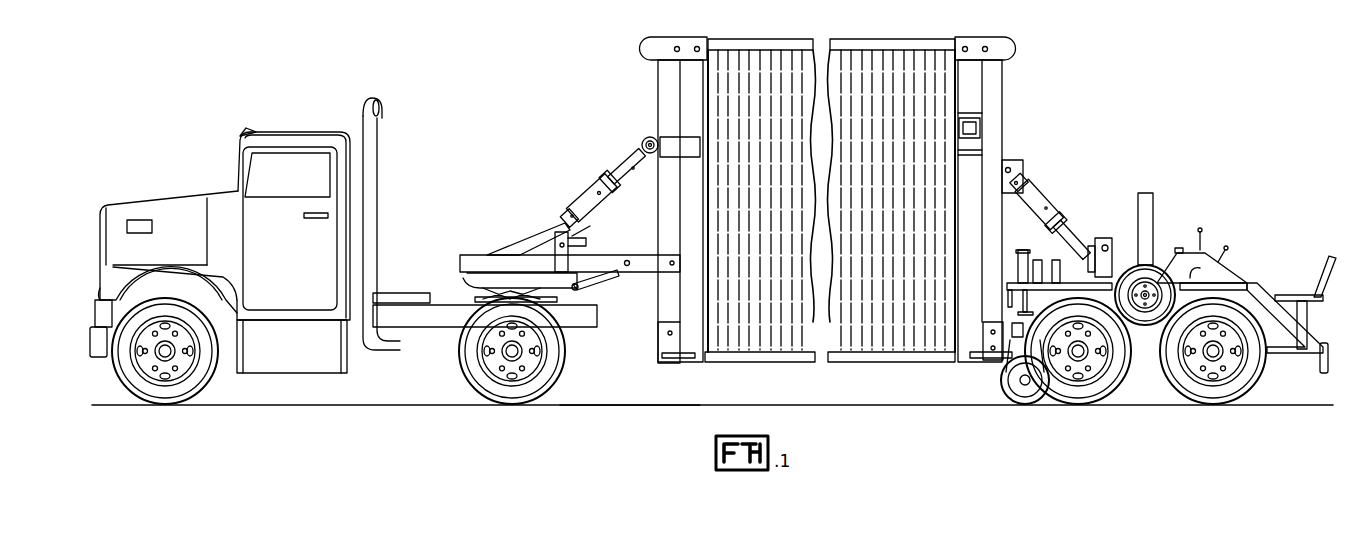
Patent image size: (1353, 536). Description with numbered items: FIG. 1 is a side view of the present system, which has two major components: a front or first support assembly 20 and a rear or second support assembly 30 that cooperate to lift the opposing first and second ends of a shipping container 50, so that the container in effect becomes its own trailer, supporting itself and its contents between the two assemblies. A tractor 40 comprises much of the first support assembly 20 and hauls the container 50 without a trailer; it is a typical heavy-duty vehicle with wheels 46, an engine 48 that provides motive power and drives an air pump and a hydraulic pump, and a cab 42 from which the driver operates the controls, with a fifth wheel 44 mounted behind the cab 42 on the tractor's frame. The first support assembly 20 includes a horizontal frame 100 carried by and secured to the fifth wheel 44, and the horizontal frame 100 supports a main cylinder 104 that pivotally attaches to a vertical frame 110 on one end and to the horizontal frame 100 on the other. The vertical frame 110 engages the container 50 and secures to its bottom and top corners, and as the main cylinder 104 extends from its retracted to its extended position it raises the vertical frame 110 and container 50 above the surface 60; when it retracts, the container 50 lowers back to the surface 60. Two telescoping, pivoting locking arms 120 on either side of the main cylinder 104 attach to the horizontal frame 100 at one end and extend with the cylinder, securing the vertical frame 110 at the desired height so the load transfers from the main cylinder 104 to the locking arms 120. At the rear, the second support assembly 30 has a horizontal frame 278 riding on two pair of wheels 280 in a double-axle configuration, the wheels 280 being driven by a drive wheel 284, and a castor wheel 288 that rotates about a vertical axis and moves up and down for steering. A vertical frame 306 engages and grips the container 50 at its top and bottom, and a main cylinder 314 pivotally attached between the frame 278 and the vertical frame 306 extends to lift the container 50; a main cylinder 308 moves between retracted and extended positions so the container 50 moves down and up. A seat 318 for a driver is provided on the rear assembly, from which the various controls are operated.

The first support assembly 20 is at (519, 221).
The second support assembly 30 is at (1218, 236).
The tractor 40 is at (196, 176).
The cab 42 is at (311, 128).
The fifth wheel 44 is at (466, 287).
The wheels 46 is at (119, 379).
The engine 48 is at (130, 199).
The shipping container 50 is at (784, 43).
The surface 60 is at (617, 404).
The horizontal frame 100 is at (518, 264).
The main cylinder 104 is at (594, 198).
The vertical frame 110 is at (671, 225).
The locking arms 120 is at (598, 210).
The frame 278 is at (1228, 279).
The wheels 280 is at (1172, 366).
The drive wheel 284 is at (1163, 244).
The castor wheel 288 is at (1003, 383).
The vertical frame 306 is at (993, 144).
The main cylinder 308 is at (1073, 215).
The main cylinder 314 is at (1068, 238).
The seat 318 is at (1319, 268).